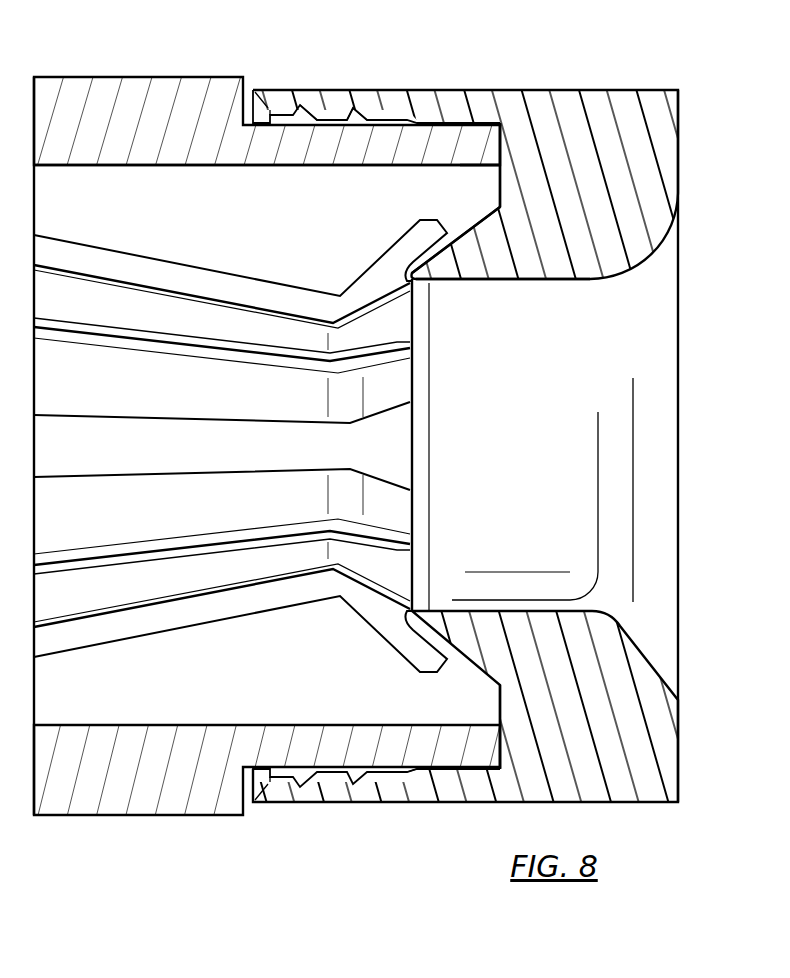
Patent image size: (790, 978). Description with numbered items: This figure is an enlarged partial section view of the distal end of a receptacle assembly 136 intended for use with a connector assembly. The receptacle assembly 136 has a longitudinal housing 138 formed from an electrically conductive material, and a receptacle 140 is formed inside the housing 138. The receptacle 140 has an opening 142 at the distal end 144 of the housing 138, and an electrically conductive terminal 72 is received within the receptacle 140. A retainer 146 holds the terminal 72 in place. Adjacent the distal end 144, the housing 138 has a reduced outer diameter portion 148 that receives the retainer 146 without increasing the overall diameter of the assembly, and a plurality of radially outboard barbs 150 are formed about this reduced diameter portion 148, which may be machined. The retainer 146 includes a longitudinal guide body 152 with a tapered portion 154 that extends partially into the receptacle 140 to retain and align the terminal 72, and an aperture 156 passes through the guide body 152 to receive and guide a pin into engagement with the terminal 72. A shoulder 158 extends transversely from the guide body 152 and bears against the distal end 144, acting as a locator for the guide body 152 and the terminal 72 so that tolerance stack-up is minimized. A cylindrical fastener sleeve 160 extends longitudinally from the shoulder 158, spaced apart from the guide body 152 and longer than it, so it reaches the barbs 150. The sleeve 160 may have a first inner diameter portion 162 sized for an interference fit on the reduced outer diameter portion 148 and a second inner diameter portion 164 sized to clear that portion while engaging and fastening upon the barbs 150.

The receptacle assembly 136 is at (505, 53).
The longitudinal housing 138 is at (101, 77).
The receptacle 140 is at (200, 167).
The opening 142 is at (473, 167).
The distal end 144 is at (505, 158).
The retainer 146 is at (623, 85).
The reduced outer diameter portion 148 is at (328, 120).
The barbs 150 is at (358, 120).
The longitudinal guide body 152 is at (600, 250).
The tapered portion 154 is at (472, 212).
The aperture 156 is at (558, 282).
The shoulder 158 is at (497, 716).
The cylindrical fastener sleeve 160 is at (297, 102).
The first inner diameter portion 162 is at (440, 758).
The second inner diameter portion 164 is at (373, 780).
The electrically conductive terminal 72 is at (145, 637).